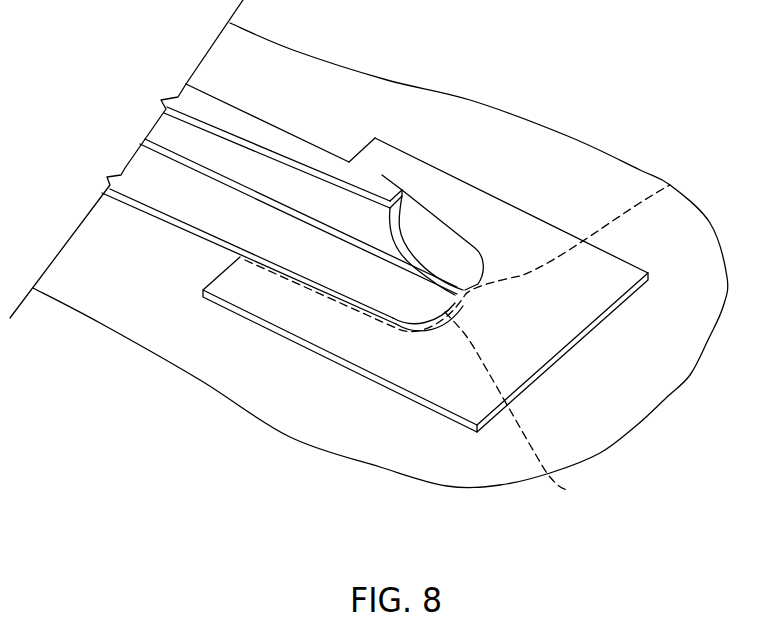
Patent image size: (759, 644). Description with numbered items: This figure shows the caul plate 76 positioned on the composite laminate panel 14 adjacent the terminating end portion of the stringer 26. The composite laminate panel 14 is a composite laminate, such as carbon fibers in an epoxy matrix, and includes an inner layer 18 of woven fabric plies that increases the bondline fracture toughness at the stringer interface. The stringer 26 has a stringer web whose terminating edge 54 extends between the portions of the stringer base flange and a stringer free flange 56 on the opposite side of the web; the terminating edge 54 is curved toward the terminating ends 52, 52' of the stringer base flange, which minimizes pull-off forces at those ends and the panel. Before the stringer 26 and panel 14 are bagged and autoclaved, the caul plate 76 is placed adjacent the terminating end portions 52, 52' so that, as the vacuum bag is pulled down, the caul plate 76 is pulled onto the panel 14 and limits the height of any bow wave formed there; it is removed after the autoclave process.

The composite laminate panel 14 is at (562, 165).
The inner layer 18 is at (617, 173).
The stringer 26 is at (247, 117).
The terminating end of the stringer base flange 52 is at (491, 249).
The terminating end of the stringer base flange 52' is at (534, 410).
The terminating edge 54 is at (397, 212).
The stringer free flange 56 is at (208, 112).
The caul plate 76 is at (533, 348).